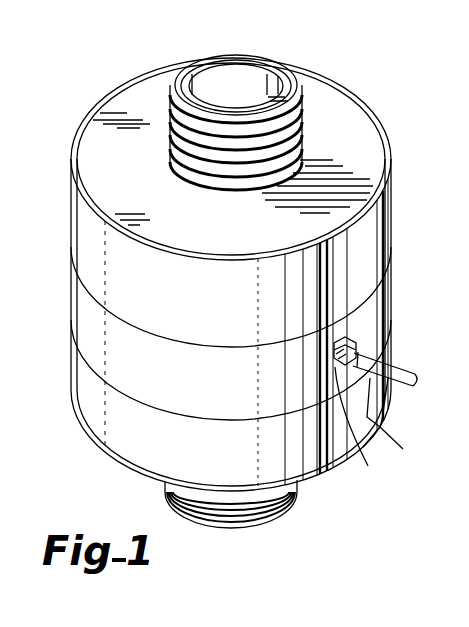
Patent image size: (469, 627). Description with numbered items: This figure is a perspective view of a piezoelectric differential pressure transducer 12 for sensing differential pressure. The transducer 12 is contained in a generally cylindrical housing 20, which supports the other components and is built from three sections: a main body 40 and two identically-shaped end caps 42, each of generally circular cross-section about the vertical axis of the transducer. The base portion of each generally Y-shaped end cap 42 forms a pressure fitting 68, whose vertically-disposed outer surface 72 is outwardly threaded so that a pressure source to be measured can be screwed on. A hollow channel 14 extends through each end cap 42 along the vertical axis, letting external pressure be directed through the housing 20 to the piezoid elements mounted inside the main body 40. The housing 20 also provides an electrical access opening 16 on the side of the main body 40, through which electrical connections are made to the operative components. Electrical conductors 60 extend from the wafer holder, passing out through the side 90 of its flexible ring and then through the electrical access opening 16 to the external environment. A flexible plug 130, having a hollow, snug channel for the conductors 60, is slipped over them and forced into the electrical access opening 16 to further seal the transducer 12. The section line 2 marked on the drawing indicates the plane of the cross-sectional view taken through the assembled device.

The section line 2- 2 is at (233, 112).
The differential pressure transducer 12 is at (430, 139).
The channel 14 is at (253, 83).
The electrical access opening 16 is at (361, 338).
The housing 20 is at (66, 322).
The main body 40 is at (93, 350).
The end cap 42 is at (86, 232).
The electrical conductor 60 is at (382, 430).
The pressure fitting 68 is at (168, 98).
The outer surface of pressure fitting 72 is at (177, 136).
The side of flexible ring 90 is at (463, 391).
The flexible plug 130 is at (345, 430).